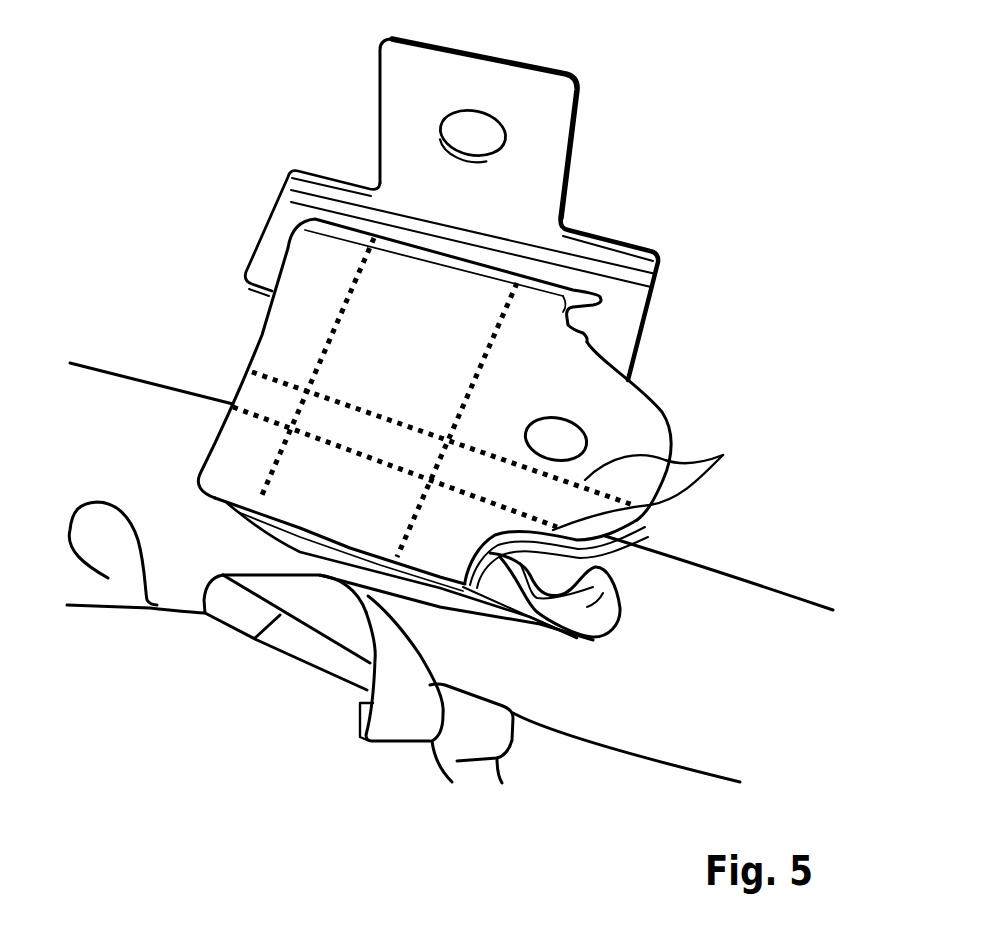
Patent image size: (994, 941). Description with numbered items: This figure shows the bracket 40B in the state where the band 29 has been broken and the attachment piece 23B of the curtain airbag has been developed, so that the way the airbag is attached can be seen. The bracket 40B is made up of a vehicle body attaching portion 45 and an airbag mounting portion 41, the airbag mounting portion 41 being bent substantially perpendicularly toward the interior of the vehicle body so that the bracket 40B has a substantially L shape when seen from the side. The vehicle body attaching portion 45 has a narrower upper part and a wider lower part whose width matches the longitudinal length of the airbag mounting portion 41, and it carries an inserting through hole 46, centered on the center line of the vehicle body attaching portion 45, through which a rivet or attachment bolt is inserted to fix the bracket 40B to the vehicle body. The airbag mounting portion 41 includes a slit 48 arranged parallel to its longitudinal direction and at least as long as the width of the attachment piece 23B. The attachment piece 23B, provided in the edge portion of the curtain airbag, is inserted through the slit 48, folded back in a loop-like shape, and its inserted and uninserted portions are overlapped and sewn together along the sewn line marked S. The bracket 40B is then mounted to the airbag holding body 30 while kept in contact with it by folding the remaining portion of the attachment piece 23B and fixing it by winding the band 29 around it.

The bracket 40B is at (590, 93).
The vehicle body attaching portion 45 is at (405, 98).
The inserting through hole 46 is at (490, 143).
The airbag mounting portion 41 is at (267, 242).
The attachment piece 23B is at (300, 352).
The slit 48 is at (590, 338).
The sewn line S is at (650, 485).
The airbag holding body 30 is at (717, 600).
The band 29 is at (235, 622).